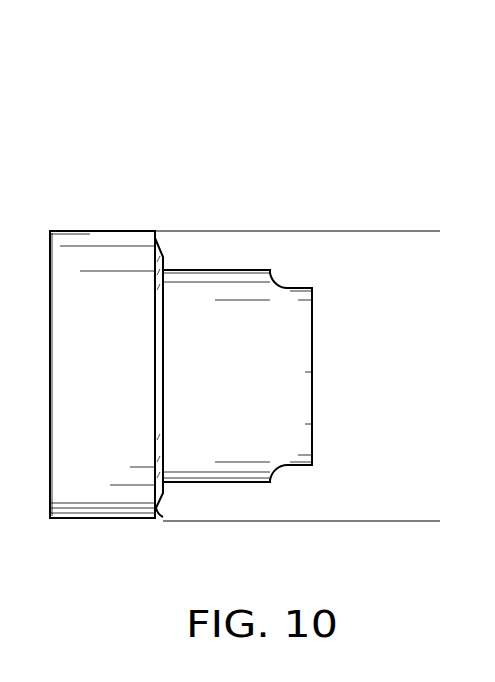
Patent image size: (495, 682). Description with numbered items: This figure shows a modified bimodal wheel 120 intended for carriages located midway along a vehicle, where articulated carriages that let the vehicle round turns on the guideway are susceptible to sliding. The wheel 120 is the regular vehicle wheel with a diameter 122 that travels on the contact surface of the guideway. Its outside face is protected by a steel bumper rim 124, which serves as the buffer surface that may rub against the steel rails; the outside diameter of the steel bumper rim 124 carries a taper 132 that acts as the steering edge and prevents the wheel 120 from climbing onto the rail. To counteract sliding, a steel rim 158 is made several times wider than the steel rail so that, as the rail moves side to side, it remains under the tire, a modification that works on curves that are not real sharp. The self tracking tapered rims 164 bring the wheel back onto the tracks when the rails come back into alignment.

The bimodal wheel 120 is at (157, 170).
The diameter 122 is at (417, 245).
The steel bumper rim 124 is at (163, 256).
The taper 132 is at (158, 500).
The steel rim 158 is at (245, 296).
The self tracking tapered rim 164 is at (303, 297).